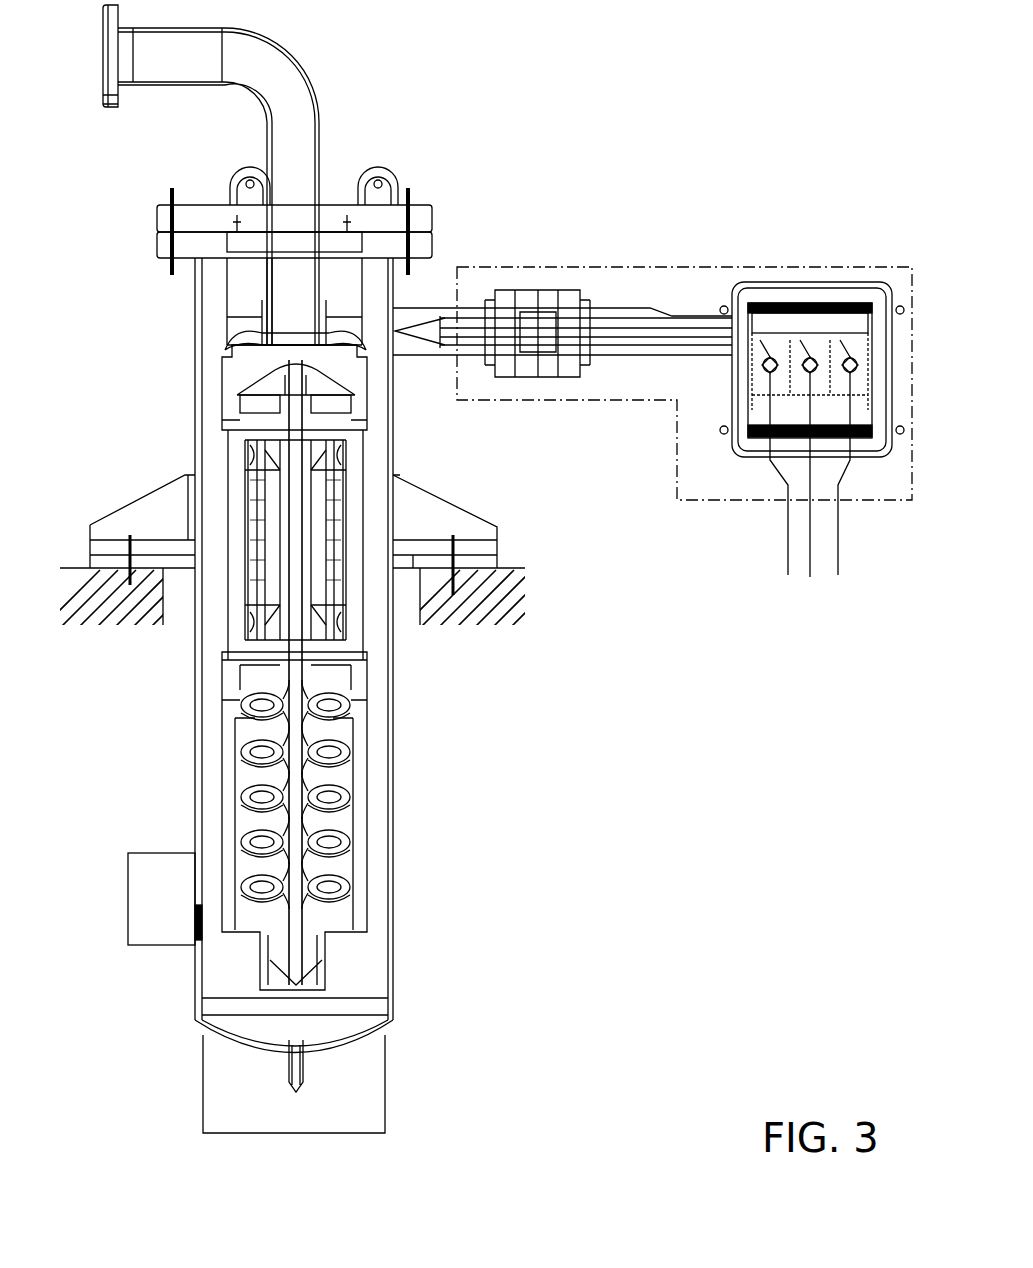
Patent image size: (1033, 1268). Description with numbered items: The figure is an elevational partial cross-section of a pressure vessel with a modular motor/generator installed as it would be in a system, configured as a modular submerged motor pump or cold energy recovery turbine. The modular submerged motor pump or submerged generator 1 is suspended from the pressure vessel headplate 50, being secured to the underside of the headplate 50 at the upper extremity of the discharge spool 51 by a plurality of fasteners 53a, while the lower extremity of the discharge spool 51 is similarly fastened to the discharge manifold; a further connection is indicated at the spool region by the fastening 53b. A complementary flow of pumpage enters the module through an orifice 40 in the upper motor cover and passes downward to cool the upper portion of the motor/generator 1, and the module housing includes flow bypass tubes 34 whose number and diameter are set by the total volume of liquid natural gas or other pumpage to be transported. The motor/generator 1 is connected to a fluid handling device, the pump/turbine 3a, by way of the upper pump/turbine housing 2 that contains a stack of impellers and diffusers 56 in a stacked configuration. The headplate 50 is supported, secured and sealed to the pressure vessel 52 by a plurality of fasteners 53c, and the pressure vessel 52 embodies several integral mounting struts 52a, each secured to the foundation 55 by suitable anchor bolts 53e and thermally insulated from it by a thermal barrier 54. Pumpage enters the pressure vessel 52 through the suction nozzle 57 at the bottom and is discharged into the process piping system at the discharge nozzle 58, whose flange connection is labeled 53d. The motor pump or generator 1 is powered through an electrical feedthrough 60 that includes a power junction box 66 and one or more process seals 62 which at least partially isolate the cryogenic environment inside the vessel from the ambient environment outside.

The modular submerged motor pump / motor-generator module 1 is at (342, 530).
The pump/turbine housing 2 is at (362, 690).
The pump/turbine 3a is at (357, 810).
The flow bypass tubes 34 is at (232, 341).
The orifice 40 is at (220, 397).
The pressure vessel headplate 50 is at (333, 215).
The discharge spool 51 is at (268, 290).
The pressure vessel 52 is at (392, 513).
The mounting struts 52a is at (458, 545).
The fasteners 53a is at (237, 226).
The pipe connection 53b is at (339, 329).
The fasteners 53c is at (408, 199).
The pipe flange face 53d is at (108, 100).
The anchor bolts 53e is at (453, 548).
The thermal barrier 54 is at (500, 567).
The foundation 55 is at (500, 600).
The stack of impellers and diffusers 56 is at (342, 746).
The suction nozzle 57 is at (296, 1077).
The discharge nozzle 58 is at (107, 52).
The electrical feedthrough 60 is at (664, 268).
The process seals 62 is at (543, 312).
The power junction box 66 is at (811, 352).